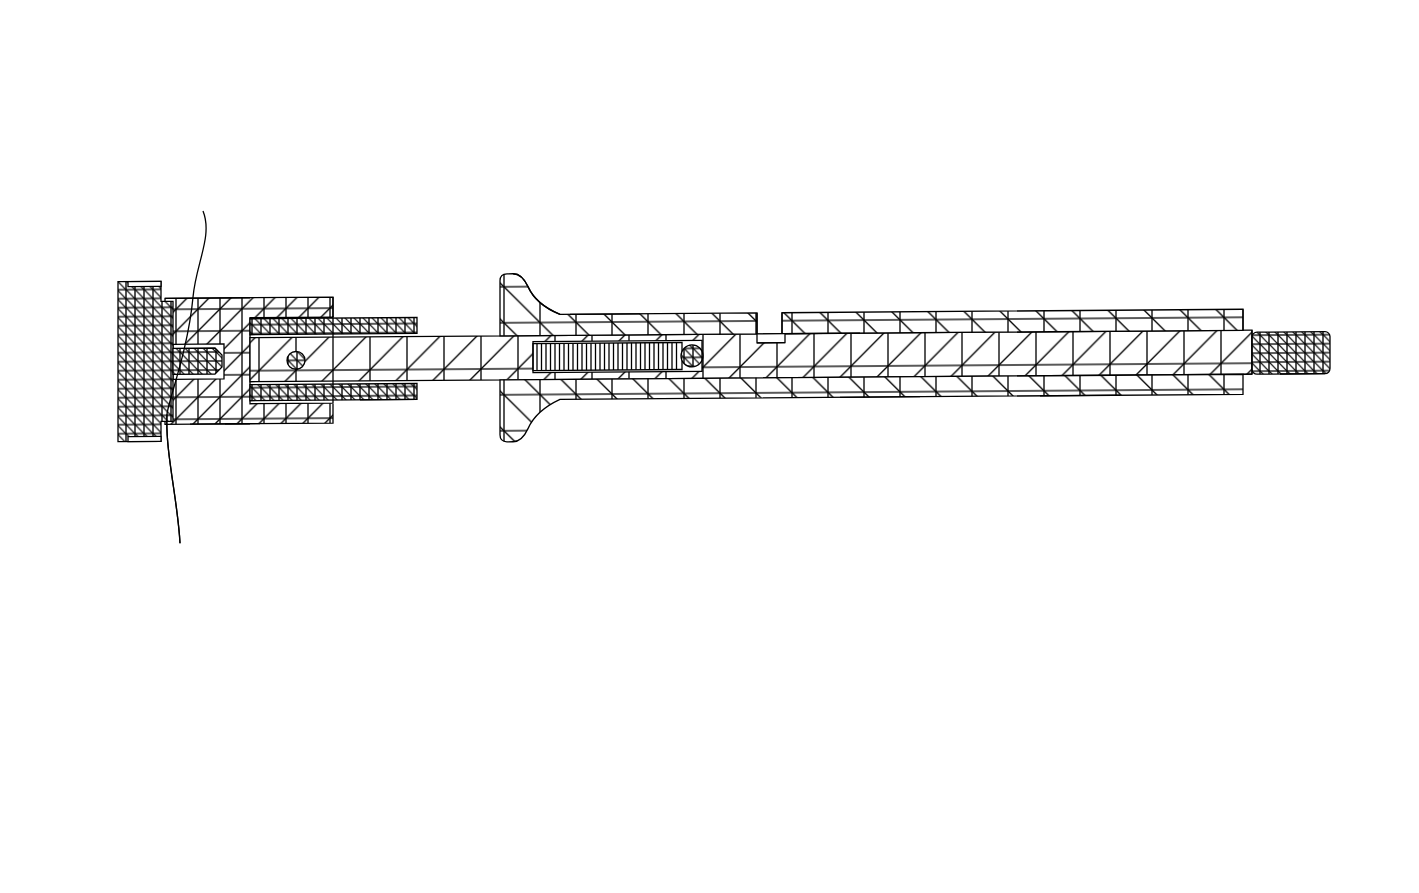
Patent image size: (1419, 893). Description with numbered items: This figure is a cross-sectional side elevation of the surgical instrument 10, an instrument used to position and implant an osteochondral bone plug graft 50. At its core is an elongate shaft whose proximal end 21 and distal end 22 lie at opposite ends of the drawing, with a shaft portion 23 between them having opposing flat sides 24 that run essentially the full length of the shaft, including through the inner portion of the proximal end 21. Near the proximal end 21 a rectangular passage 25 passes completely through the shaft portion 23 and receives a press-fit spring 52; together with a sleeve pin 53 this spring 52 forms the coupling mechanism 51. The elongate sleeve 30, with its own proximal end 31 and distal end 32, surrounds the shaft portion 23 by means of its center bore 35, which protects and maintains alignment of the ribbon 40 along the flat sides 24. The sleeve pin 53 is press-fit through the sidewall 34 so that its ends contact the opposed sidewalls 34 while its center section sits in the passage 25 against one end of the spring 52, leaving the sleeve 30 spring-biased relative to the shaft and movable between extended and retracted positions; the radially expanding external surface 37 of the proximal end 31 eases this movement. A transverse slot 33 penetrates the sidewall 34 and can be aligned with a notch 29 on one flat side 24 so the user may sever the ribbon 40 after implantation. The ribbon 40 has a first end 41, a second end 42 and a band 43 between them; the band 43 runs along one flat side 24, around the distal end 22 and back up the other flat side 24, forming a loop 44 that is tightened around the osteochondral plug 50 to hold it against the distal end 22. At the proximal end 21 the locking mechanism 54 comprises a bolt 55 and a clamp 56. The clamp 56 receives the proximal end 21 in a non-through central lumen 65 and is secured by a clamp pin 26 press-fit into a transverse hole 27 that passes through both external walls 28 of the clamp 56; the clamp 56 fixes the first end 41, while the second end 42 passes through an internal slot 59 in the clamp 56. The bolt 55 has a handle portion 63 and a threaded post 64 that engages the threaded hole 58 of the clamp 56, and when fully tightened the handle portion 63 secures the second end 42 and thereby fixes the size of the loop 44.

The surgical instrument 10 is at (721, 295).
The proximal end 21 is at (237, 405).
The distal end 22 is at (1254, 382).
The shaft portion 23 is at (878, 403).
The flat sides 24 is at (472, 336).
The passage 25 is at (690, 372).
The clamp pin 26 is at (296, 370).
The transverse hole 27 is at (367, 385).
The external wall 28 is at (255, 335).
The notch 29 is at (800, 346).
The elongate sleeve 30 is at (451, 286).
The proximal end 31 is at (522, 283).
The distal end 32 is at (1246, 320).
The transverse slot 33 is at (770, 350).
The sidewall 34 is at (773, 339).
The center bore 35 is at (1250, 337).
The external surface 37 is at (1082, 403).
The ribbon 40 is at (203, 511).
The first end 41 is at (222, 346).
The second end 42 is at (180, 521).
The band 43 is at (765, 336).
The loop 44 is at (1333, 360).
The osteochondral bone plug graft 50 is at (1309, 388).
The coupling mechanism 51 is at (606, 395).
The spring 52 is at (593, 337).
The sleeve pin 53 is at (746, 404).
The locking mechanism 54 is at (181, 249).
The bolt 55 is at (103, 356).
The clamp 56 is at (341, 286).
The threaded hole 58 is at (213, 360).
The internal slot 59 is at (207, 408).
The handle portion 63 is at (143, 438).
The threaded post 64 is at (190, 250).
The central lumen 65 is at (341, 309).